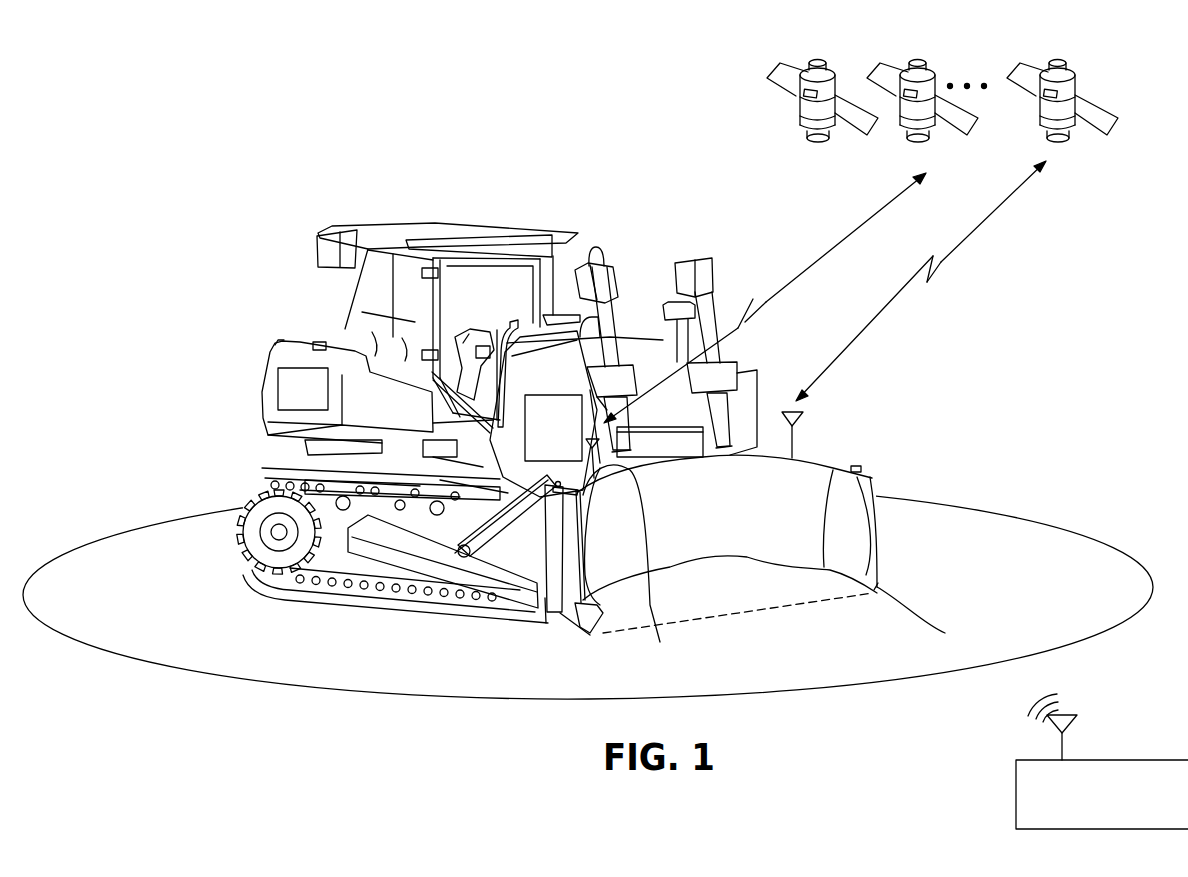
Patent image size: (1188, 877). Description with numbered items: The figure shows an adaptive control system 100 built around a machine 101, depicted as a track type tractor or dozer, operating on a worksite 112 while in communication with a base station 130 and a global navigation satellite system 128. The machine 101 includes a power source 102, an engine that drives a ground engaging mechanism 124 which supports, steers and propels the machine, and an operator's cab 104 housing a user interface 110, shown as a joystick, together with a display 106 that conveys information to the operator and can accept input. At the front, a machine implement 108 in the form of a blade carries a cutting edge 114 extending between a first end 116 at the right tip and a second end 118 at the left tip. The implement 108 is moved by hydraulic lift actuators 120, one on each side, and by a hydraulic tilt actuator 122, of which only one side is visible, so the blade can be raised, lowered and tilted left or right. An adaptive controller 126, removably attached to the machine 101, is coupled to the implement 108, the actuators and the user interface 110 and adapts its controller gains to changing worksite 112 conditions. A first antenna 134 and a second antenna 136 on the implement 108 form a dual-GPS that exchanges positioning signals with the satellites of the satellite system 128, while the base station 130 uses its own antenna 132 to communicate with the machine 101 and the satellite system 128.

The adaptive control system 100 is at (163, 249).
The machine 101 is at (264, 398).
The power source 102 is at (562, 436).
The cab 104 is at (378, 282).
The display 106 is at (488, 316).
The machine implement 108 is at (770, 478).
The user interface 110 is at (464, 326).
The worksite 112 is at (958, 503).
The cutting edge 114 is at (730, 620).
The first end 116 is at (589, 633).
The second end 118 is at (880, 588).
The hydraulic lift actuator 120 is at (622, 338).
The hydraulic tilt actuator 122 is at (497, 620).
The ground engaging mechanism 124 is at (358, 607).
The adaptive controller 126 is at (303, 389).
The global navigation satellite system (GNSS) 128 is at (1120, 48).
The base station 130 is at (1102, 794).
The antenna 132 is at (1065, 746).
The first antenna 134 is at (635, 568).
The second antenna 136 is at (787, 425).